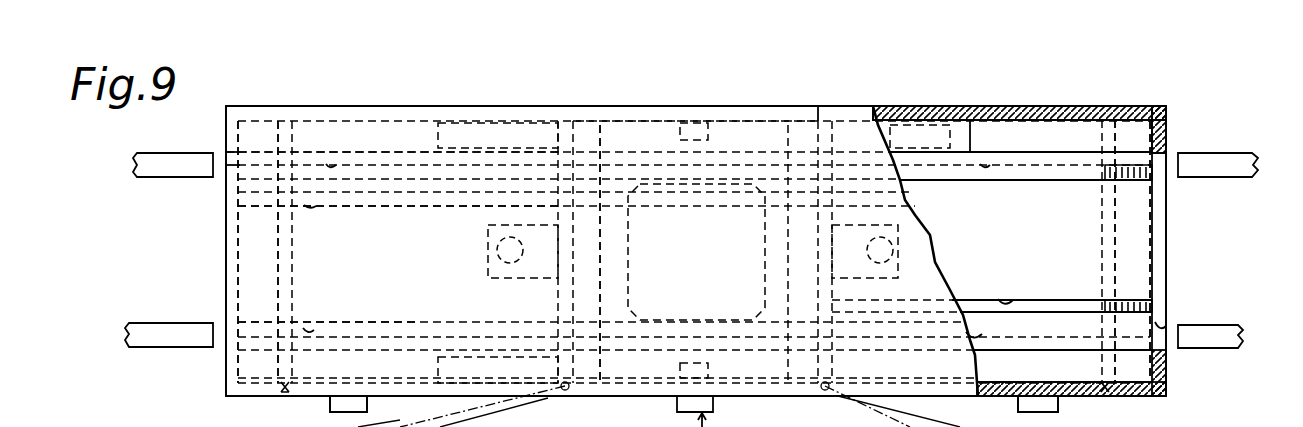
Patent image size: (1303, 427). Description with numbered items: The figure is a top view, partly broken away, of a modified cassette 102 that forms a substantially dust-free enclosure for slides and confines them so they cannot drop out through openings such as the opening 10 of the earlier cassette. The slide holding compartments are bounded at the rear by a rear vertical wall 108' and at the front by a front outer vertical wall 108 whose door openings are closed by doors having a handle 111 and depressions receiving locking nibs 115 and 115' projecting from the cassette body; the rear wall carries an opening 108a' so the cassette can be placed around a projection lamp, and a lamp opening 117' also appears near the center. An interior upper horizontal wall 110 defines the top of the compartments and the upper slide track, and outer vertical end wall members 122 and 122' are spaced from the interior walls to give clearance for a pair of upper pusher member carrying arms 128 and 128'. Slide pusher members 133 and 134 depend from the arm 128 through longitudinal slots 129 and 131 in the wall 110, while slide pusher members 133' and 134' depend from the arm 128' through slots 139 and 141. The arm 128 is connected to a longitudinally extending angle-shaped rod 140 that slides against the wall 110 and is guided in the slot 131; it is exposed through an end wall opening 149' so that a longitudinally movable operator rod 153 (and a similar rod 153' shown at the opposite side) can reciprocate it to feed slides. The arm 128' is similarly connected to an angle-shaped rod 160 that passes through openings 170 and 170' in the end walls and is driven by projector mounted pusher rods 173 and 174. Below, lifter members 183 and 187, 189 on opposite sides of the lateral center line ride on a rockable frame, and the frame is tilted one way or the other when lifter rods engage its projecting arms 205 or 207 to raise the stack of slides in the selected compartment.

The opening 10 is at (159, 367).
The cassette 102 is at (446, 90).
The front outer vertical wall 108 is at (493, 404).
The rear vertical wall 108' is at (672, 220).
The opening 108a' is at (695, 86).
The interior upper horizontal wall 110 is at (436, 261).
The handle 111 is at (338, 410).
The locking nib 115 is at (255, 403).
The locking nib 115' is at (1136, 404).
The opening 117' is at (721, 191).
The outer vertical end wall member 122 is at (193, 252).
The outer vertical end wall member 122' is at (1205, 252).
The upper pusher member carrying arm 128 is at (216, 252).
The upper pusher member carrying arm 128' is at (1180, 251).
The longitudinal slot 129 is at (312, 208).
The longitudinal slot 131 is at (312, 328).
The slide pusher member 133 is at (357, 212).
The slide pusher member 133' is at (1180, 292).
The slide pusher member 134 is at (300, 347).
The slide pusher member 134' is at (1172, 189).
The longitudinal slot 139 is at (330, 160).
The angle-shaped rod 140 is at (1062, 345).
The longitudinal slot 141 is at (1006, 300).
The opening 149' is at (1205, 312).
The operator rod 153 is at (141, 315).
The bar 153' is at (1240, 325).
The angle-shaped rod 160 is at (1068, 160).
The opening 170 is at (355, 135).
The opening 170' is at (1193, 120).
The projector mounted pusher rod 173 is at (150, 167).
The projector mounted pusher rod 174 is at (1215, 160).
The lifter member 183 is at (462, 134).
The lifter member 187 is at (925, 140).
The lifter member 189 is at (908, 397).
The arm 205 is at (500, 262).
The arm 207 is at (925, 250).